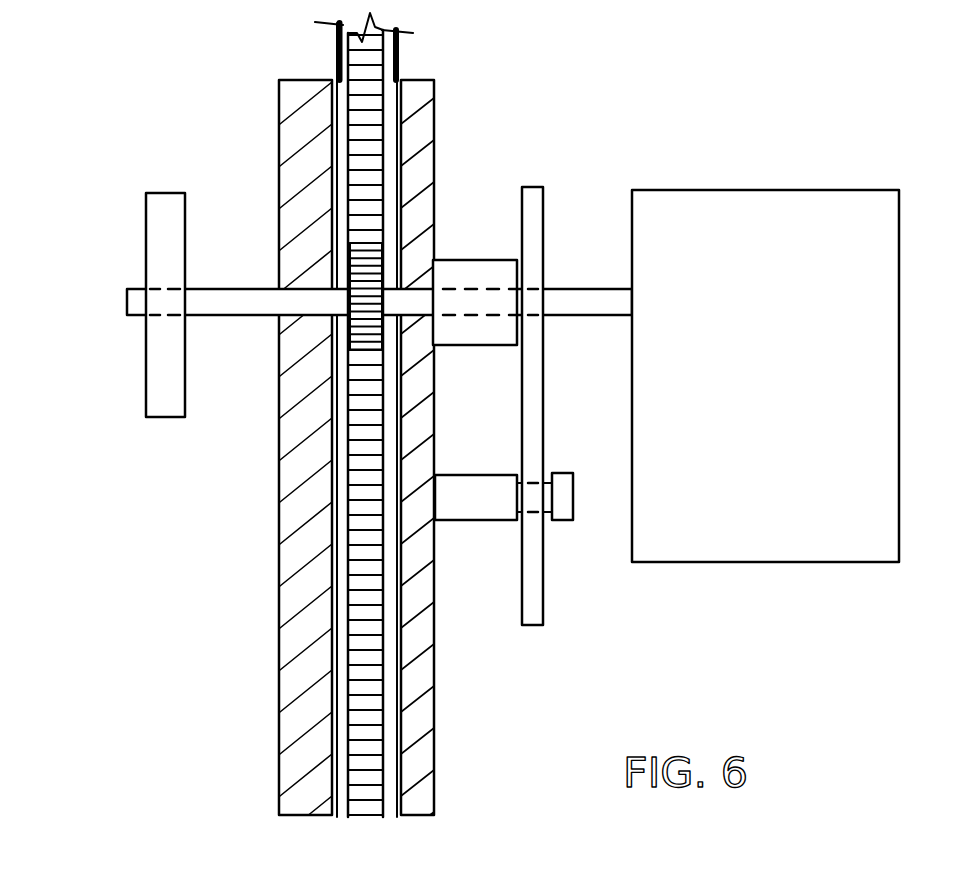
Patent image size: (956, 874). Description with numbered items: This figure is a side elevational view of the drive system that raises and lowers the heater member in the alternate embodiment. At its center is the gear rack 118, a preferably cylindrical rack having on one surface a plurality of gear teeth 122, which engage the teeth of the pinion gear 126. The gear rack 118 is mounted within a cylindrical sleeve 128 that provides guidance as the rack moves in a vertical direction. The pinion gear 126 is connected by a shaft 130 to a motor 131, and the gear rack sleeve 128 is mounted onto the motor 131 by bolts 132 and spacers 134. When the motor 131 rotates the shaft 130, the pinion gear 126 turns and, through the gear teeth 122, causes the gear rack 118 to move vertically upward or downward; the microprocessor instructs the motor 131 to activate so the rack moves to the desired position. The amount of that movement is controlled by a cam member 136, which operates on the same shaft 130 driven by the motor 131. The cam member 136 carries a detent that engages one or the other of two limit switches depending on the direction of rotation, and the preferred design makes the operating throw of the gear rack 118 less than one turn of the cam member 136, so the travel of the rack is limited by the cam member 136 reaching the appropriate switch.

The gear rack 118 is at (332, 58).
The gear teeth 122 is at (373, 78).
The pinion gear 126 is at (360, 274).
The cylindrical sleeve 128 is at (300, 556).
The shaft 130 is at (240, 307).
The motor 131 is at (698, 548).
The bolts 132 is at (553, 522).
The spacers 134 is at (467, 522).
The cam member 136 is at (146, 250).